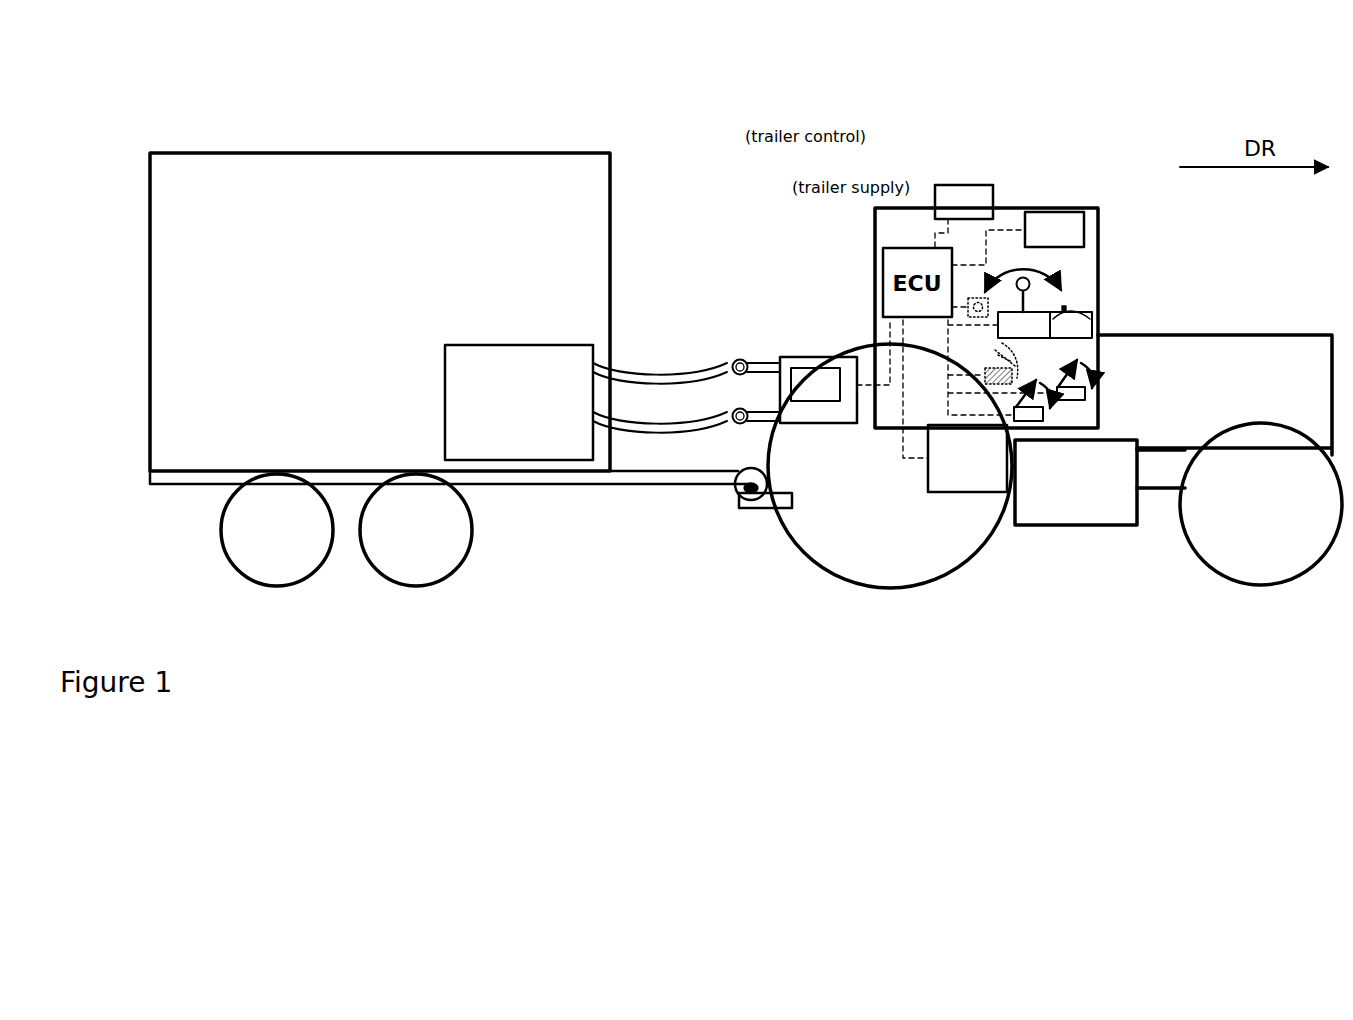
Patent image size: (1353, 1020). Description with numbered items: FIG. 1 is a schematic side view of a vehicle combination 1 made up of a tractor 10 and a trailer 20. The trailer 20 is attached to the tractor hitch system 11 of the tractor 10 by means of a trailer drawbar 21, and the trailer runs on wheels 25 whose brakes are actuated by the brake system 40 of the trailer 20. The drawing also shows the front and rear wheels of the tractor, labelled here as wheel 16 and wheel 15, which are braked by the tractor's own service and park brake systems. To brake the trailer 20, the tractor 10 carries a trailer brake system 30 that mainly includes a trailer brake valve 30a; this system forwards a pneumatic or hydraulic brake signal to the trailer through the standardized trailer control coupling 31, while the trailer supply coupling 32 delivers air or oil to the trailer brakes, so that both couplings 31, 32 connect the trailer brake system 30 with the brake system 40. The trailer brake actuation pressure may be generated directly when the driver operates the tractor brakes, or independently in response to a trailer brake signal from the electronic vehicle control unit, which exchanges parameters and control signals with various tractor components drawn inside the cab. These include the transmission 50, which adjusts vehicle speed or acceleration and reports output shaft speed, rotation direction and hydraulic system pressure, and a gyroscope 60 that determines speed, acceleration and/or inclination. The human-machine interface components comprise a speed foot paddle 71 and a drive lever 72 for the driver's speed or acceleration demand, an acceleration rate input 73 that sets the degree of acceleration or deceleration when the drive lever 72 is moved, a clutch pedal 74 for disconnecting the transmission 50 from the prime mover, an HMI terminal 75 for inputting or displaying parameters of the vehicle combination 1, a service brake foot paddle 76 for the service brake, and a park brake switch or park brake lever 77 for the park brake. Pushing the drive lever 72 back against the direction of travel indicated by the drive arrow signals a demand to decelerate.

The vehicle combination 1 is at (588, 86).
The tractor 10 is at (1233, 373).
The tractor hitch system 11 is at (752, 510).
The rear wheel of tractor 15 is at (1247, 500).
The front wheel of tractor 16 is at (852, 500).
The trailer 20 is at (225, 207).
The trailer drawbar 21 is at (747, 487).
The wheels of the trailer 25 is at (385, 518).
The trailer brake system 30 is at (800, 362).
The trailer brake valve 30a is at (815, 384).
The trailer control coupling 31 is at (735, 362).
The trailer supply coupling 32 is at (739, 410).
The brake system of the trailer 40 is at (519, 402).
The transmission 50 is at (967, 458).
The gyroscope 60 is at (964, 202).
The speed foot paddle 71 is at (1078, 400).
The drive lever 72 is at (1025, 323).
The acceleration rate input 73 is at (1077, 328).
The clutch pedal 74 is at (1030, 421).
The HMI terminal 75 is at (1054, 229).
The service brake foot paddle 76 is at (1007, 353).
The park brake switch or park brake lever 77 is at (981, 296).